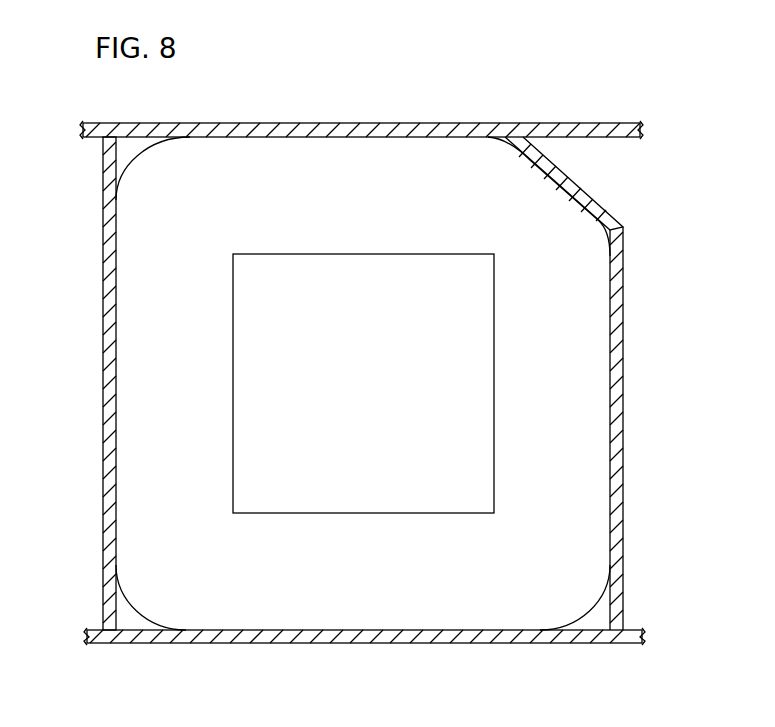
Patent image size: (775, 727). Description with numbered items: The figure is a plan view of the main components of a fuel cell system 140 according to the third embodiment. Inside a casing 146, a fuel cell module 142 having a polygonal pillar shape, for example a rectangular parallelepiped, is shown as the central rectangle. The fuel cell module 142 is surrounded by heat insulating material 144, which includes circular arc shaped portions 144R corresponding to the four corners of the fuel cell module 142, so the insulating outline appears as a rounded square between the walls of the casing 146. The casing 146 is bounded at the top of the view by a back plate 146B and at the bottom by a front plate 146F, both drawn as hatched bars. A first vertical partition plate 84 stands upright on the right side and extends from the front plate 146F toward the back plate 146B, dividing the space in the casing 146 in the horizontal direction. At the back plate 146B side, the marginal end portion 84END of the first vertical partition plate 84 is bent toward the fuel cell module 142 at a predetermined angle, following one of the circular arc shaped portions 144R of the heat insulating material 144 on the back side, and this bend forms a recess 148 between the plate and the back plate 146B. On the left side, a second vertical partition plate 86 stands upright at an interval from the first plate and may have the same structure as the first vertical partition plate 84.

The fuel cell system 140 is at (649, 73).
The fuel cell module 142 is at (430, 162).
The heat insulating material 144 is at (585, 420).
The circular arc shaped portion 144R is at (592, 617).
The casing 146 is at (256, 121).
The back plate 146B is at (336, 122).
The front plate 146F is at (398, 644).
The recess 148 is at (603, 160).
The first vertical partition plate 84 is at (626, 299).
The marginal end portion 84END is at (587, 188).
The second vertical partition plate 86 is at (101, 339).